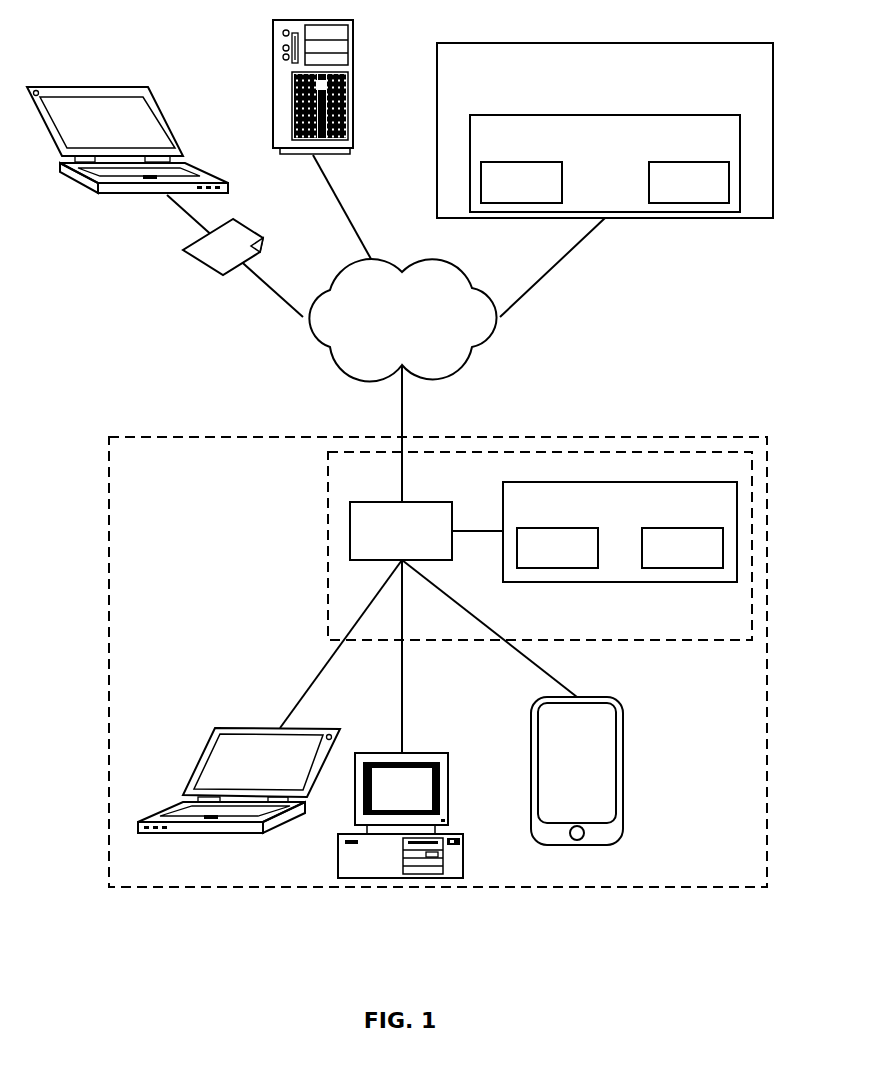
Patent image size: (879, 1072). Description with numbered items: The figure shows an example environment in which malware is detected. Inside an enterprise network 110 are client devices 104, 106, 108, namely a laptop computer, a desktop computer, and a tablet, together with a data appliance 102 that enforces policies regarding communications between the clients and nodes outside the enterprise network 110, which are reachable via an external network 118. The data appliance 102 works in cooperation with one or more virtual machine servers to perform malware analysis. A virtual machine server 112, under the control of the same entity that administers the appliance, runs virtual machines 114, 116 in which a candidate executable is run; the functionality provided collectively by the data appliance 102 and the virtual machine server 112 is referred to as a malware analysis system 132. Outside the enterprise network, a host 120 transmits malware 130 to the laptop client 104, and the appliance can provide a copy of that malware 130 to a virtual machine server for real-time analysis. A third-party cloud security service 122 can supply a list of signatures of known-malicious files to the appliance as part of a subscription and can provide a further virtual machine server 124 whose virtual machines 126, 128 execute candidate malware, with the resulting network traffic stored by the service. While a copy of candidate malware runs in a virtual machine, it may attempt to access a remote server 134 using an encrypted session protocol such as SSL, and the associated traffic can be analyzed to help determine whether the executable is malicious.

The data appliance 102 is at (415, 502).
The client device (laptop computer) 104 is at (325, 728).
The client device (desktop computer) 106 is at (440, 753).
The client device (tablet) 108 is at (624, 768).
The enterprise network 110 is at (437, 437).
The virtual machine server 112 is at (622, 582).
The virtual machine 114 is at (563, 528).
The virtual machine 116 is at (675, 528).
The external network 118 is at (470, 290).
The host 120 is at (88, 87).
The cloud security service 122 is at (605, 43).
The virtual machine server 124 is at (700, 115).
The virtual machine 126 is at (530, 162).
The virtual machine 128 is at (670, 162).
The malware 130 is at (245, 225).
The malware analysis system 132 is at (328, 545).
The remote server 134 is at (355, 85).